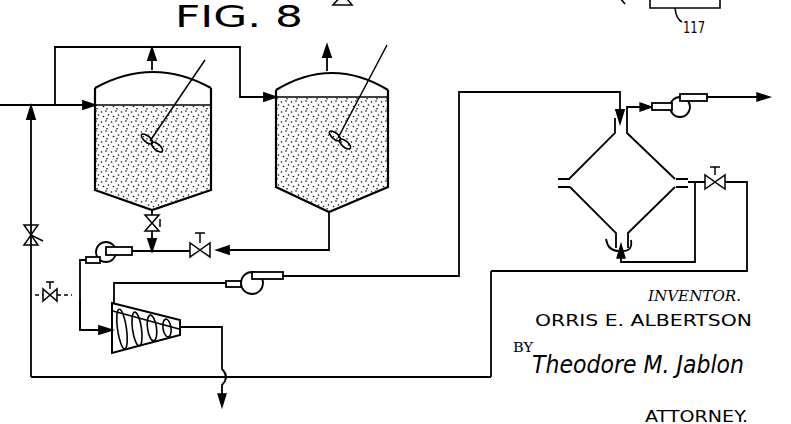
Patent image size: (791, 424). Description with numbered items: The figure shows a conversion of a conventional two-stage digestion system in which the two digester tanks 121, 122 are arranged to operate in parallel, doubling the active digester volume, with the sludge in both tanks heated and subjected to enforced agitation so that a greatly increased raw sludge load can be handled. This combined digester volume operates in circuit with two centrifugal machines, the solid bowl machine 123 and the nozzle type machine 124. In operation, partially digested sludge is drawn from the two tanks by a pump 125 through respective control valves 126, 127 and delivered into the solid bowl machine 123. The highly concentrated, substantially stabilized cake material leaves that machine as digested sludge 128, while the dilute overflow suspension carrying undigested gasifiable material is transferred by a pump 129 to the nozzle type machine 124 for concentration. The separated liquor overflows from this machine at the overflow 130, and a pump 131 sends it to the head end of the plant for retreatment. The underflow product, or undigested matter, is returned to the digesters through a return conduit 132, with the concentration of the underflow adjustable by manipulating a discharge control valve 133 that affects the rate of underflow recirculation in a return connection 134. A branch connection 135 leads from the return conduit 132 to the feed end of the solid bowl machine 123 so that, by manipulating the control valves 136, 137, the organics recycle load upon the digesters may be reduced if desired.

The digester tank 121 is at (208, 151).
The digester tank 122 is at (390, 150).
The solid bowl machine 123 is at (136, 347).
The nozzle type machine 124 is at (586, 162).
The pump 125 is at (117, 258).
The control valve 126 is at (148, 225).
The control valve 127 is at (204, 246).
The digested sludge 128 is at (222, 348).
The pump 129 is at (257, 293).
The liquor overflow 130 is at (633, 100).
The pump 131 is at (692, 113).
The return conduit 132 is at (360, 376).
The discharge control valve 133 is at (722, 180).
The return connection 134 is at (694, 248).
The branch connection 135 is at (72, 300).
The control valve 136 is at (50, 288).
The control valve 137 is at (38, 232).